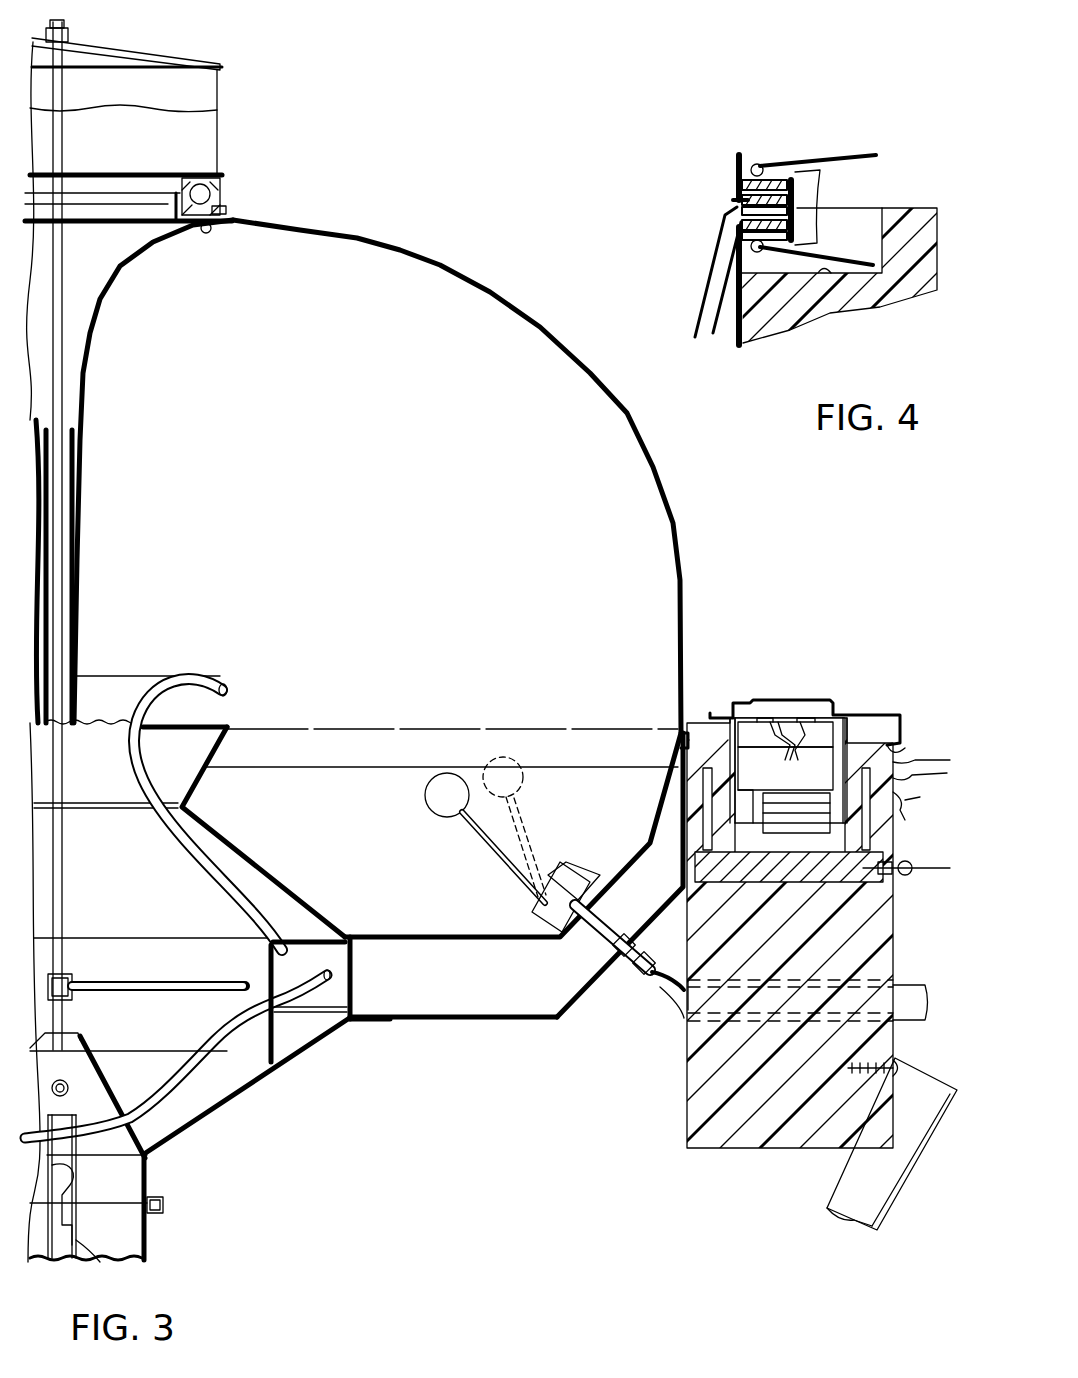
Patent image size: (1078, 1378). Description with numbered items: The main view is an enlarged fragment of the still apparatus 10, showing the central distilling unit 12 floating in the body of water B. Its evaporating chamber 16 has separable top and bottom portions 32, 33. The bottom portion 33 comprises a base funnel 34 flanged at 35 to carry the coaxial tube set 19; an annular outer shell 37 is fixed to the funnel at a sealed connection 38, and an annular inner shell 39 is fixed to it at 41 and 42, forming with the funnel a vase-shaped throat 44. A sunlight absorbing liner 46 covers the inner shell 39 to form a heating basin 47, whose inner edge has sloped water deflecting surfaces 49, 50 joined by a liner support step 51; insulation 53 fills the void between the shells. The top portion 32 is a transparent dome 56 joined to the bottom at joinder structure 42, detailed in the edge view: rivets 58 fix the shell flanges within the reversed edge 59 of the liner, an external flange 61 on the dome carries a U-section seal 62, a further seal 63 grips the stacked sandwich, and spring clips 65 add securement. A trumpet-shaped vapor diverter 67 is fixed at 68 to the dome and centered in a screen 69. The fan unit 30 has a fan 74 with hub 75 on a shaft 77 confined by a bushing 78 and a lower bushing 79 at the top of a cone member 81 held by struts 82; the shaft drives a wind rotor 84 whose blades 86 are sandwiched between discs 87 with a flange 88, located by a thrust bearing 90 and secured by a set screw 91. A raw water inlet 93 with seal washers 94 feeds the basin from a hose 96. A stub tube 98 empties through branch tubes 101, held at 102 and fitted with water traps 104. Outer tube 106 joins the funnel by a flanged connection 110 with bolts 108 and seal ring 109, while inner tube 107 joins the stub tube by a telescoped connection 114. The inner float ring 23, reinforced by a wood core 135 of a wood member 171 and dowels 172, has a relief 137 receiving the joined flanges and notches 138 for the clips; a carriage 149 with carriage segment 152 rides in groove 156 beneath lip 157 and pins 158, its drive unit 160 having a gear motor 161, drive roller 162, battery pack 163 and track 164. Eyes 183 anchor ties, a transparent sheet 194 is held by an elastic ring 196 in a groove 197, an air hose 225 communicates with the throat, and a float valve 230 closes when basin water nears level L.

In FIG. 3, the still apparatus 10 is at (482, 181).
In FIG. 3, the central distilling unit 12 is at (496, 251).
In FIG. 3, the evaporating chamber 16 is at (546, 1058).
In FIG. 3, the coaxial tube set 19 is at (226, 1260).
In FIG. 3, the inner float ring 23 is at (686, 1043).
In FIG. 3, the fan unit 30 is at (103, 1009).
In FIG. 3, the top portion 32 is at (631, 384).
In FIG. 3, the bottom portion 33 is at (504, 1034).
In FIG. 3, the base funnel 34 is at (205, 1110).
In FIG. 3, the flange 35 is at (162, 1200).
In FIG. 3, the annular outer shell 37 is at (420, 1018).
In FIG. 4, the annular outer shell 37 is at (700, 308).
In FIG. 3, the connection 38 is at (370, 1020).
In FIG. 3, the annular inner shell 39 is at (456, 940).
In FIG. 4, the annular inner shell 39 is at (735, 335).
In FIG. 3, the connection 41 is at (368, 935).
In FIG. 3, the joinder structure 42 is at (706, 700).
In FIG. 4, the joinder structure 42 is at (880, 265).
In FIG. 3, the throat 44 is at (154, 870).
In FIG. 3, the liner 46 is at (436, 935).
In FIG. 4, the liner 46 is at (712, 254).
In FIG. 3, the heating basin 47 is at (351, 777).
In FIG. 3, the water deflecting surface 49 is at (214, 748).
In FIG. 3, the water deflecting surface 50 is at (205, 714).
In FIG. 3, the liner support step 51 is at (165, 730).
In FIG. 3, the insulation 53 is at (580, 990).
In FIG. 3, the domelike wall 56 is at (628, 412).
In FIG. 4, the domelike wall 56 is at (732, 165).
In FIG. 4, the rivets 58 is at (770, 242).
In FIG. 4, the reversed edge 59 is at (820, 242).
In FIG. 4, the annular external flange 61 is at (760, 163).
In FIG. 4, the U-section rubber seal 62 is at (780, 185).
In FIG. 4, the U-section rubber seal 63 is at (795, 192).
In FIG. 4, the spring clips 65 is at (840, 152).
In FIG. 3, the vapor diverter 67 is at (96, 305).
In FIG. 3, the fixing location 68 is at (207, 233).
In FIG. 3, the screen 69 is at (100, 722).
In FIG. 3, the fan 74 is at (142, 982).
In FIG. 3, the center hub 75 is at (74, 978).
In FIG. 3, the shaft 77 is at (66, 916).
In FIG. 3, the bushing 78 is at (74, 735).
In FIG. 3, the bracket 79 is at (90, 1035).
In FIG. 3, the hollow cone member 81 is at (128, 1052).
In FIG. 3, the struts 82 is at (124, 233).
In FIG. 3, the wind-driven rotor 84 is at (247, 150).
In FIG. 3, the blades 86 is at (204, 133).
In FIG. 3, the discs 87 is at (124, 72).
In FIG. 3, the perimetral flange 88 is at (218, 185).
In FIG. 3, the thrust bearing 90 is at (146, 224).
In FIG. 3, the set screw 91 is at (226, 208).
In FIG. 3, the raw water inlet 93 is at (586, 860).
In FIG. 3, the seal washers 94 is at (604, 866).
In FIG. 3, the hose 96 is at (662, 990).
In FIG. 3, the stub tube 98 is at (66, 1143).
In FIG. 3, the branch tubes 101 is at (160, 824).
In FIG. 3, the holding point 102 is at (216, 812).
In FIG. 3, the water trap 104 is at (266, 1042).
In FIG. 3, the outer tube 106 is at (150, 1245).
In FIG. 3, the inner tube 107 is at (109, 1263).
In FIG. 3, the bolts 108 is at (150, 1192).
In FIG. 3, the seal ring 109 is at (188, 1210).
In FIG. 3, the flanged connection 110 is at (172, 1232).
In FIG. 3, the telescoped connection 114 is at (80, 1170).
In FIG. 3, the wood core 135 is at (887, 940).
In FIG. 4, the relief 137 is at (800, 200).
In FIG. 4, the notches 138 is at (828, 275).
In FIG. 3, the carriage 149 is at (874, 690).
In FIG. 3, the carriage segment 152 is at (800, 720).
In FIG. 3, the circumferential groove 156 is at (835, 880).
In FIG. 3, the circumferential lip 157 is at (878, 735).
In FIG. 3, the pins or screws 158 is at (905, 745).
In FIG. 3, the drive unit 160 is at (756, 678).
In FIG. 3, the gear motor 161 is at (788, 785).
In FIG. 3, the drive roller 162 is at (796, 870).
In FIG. 3, the battery pack 163 is at (788, 710).
In FIG. 3, the toothed track 164 is at (760, 860).
In FIG. 3, the wood member 171 is at (866, 930).
In FIG. 3, the dowels 172 is at (890, 850).
In FIG. 3, the eyes 183 is at (906, 875).
In FIG. 3, the transparent sheet 194 is at (926, 748).
In FIG. 3, the elastic ring 196 is at (928, 775).
In FIG. 3, the annular groove 197 is at (928, 805).
In FIG. 3, the air hose 225 is at (70, 1088).
In FIG. 3, the float valve 230 is at (460, 835).
In FIG. 3, the body of water B is at (400, 1108).
In FIG. 3, the level L is at (438, 765).